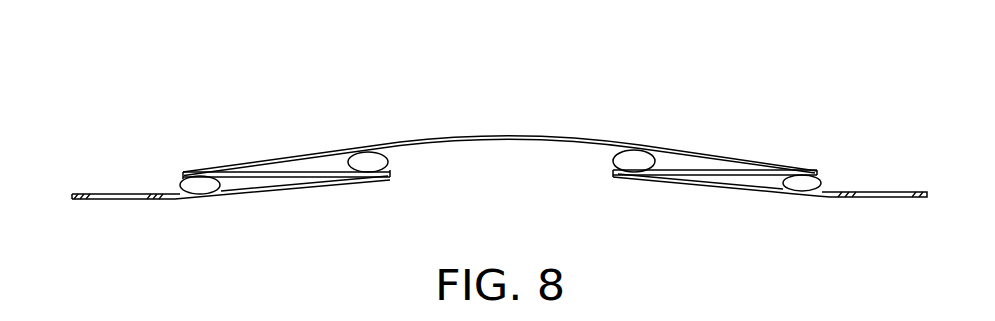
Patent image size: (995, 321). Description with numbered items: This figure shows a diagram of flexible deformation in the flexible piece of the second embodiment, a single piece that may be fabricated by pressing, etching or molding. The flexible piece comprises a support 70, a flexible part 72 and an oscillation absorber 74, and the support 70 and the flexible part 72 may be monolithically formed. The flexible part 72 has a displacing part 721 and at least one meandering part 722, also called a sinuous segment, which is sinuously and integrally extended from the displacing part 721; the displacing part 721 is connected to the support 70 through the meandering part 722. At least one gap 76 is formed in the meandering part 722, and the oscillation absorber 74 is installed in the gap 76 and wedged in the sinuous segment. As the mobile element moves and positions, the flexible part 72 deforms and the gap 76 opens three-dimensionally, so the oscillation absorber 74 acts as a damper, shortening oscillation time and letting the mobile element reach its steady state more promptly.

The support 70 is at (887, 190).
The flexible part 72 is at (500, 102).
The displacing part 721 is at (500, 137).
The meandering part 722 is at (497, 70).
The oscillation absorber 74 is at (625, 160).
The gap 76 is at (732, 180).